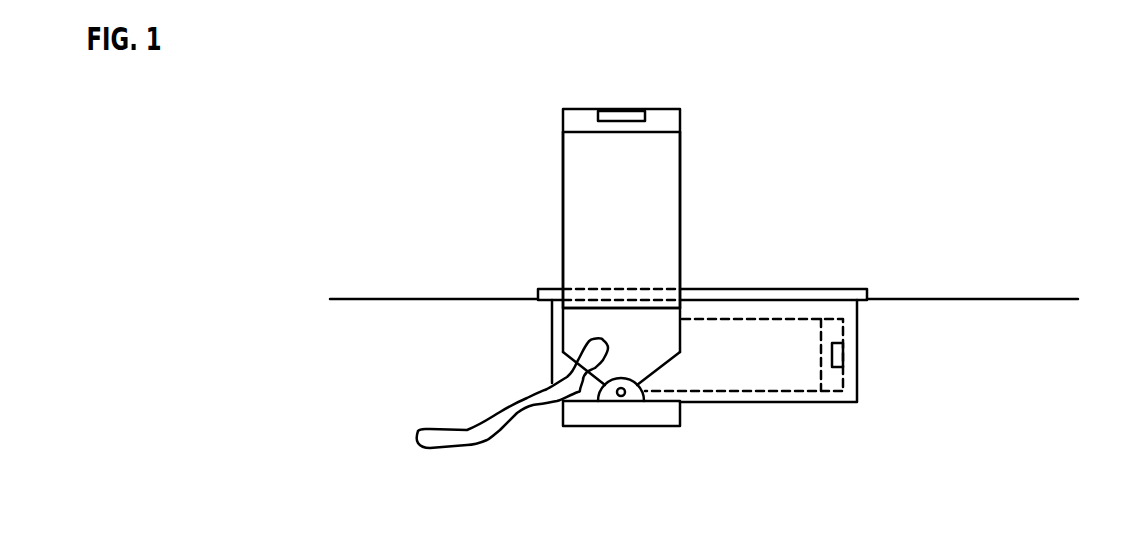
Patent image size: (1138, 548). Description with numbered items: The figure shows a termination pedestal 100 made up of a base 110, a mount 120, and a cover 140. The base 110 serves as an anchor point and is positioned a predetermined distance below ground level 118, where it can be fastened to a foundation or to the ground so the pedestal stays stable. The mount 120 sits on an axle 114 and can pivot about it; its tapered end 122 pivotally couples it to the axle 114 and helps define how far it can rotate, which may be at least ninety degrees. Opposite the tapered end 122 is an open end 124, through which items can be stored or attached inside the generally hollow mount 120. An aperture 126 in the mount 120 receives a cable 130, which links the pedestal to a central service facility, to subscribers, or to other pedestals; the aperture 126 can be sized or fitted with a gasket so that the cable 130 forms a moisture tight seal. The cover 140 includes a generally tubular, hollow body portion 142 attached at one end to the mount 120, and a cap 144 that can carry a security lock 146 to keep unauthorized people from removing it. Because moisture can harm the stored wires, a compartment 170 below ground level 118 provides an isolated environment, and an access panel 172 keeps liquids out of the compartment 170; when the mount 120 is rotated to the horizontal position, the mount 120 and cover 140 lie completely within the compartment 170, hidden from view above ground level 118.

The termination pedestal 100 is at (805, 145).
The base 110 is at (662, 426).
The axle 114 is at (621, 396).
The ground level 118 is at (1050, 299).
The mount 120 is at (576, 316).
The tapered end 122 is at (672, 372).
The open end 124 is at (648, 326).
The aperture 126 is at (580, 334).
The cable 130 is at (513, 418).
The cover 140 is at (636, 210).
The body portion 142 is at (563, 218).
The cap 144 is at (563, 127).
The security lock 146 is at (621, 110).
The compartment 170 is at (857, 358).
The access panel 172 is at (838, 289).